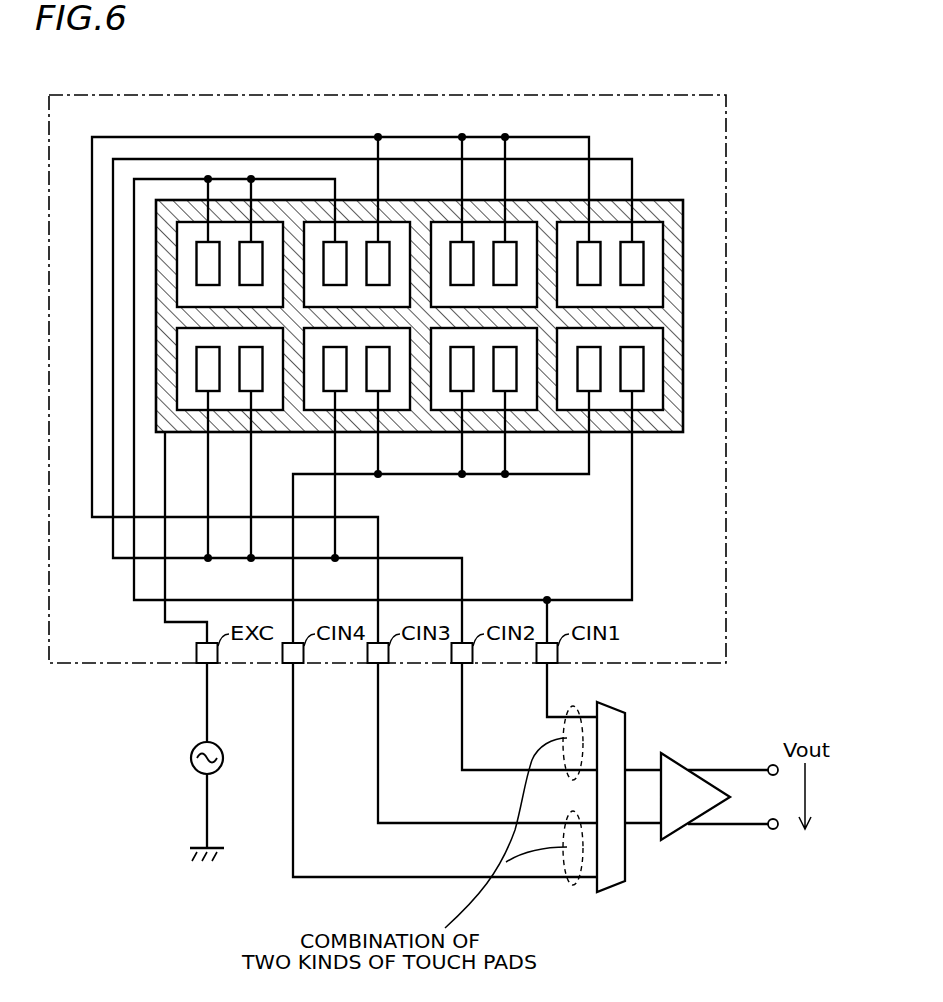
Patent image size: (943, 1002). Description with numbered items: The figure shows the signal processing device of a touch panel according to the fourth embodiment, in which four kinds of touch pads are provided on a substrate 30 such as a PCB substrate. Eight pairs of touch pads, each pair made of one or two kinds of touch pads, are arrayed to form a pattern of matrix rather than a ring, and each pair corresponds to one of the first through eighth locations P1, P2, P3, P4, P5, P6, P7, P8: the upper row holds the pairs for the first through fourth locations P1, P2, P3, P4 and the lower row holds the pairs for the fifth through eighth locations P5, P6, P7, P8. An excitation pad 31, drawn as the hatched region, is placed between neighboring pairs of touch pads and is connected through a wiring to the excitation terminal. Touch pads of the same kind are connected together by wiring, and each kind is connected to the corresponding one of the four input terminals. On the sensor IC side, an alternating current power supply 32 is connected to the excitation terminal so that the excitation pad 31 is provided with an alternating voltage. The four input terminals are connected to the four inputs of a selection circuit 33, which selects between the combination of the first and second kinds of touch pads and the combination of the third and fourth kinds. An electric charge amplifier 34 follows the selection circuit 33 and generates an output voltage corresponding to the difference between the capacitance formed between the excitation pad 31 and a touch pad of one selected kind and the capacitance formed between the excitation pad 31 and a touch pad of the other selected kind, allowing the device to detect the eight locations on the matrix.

The substrate 30 is at (718, 262).
The excitation pad 31 is at (673, 313).
The alternating current power supply 32 is at (188, 758).
The selection circuit 33 is at (612, 882).
The electric charge amplifier 34 is at (676, 833).
The first location P1 is at (191, 233).
The second location P2 is at (318, 233).
The third location P3 is at (448, 233).
The fourth location P4 is at (576, 233).
The fifth location P5 is at (191, 394).
The sixth location P6 is at (318, 394).
The seventh location P7 is at (446, 394).
The eighth location P8 is at (574, 394).